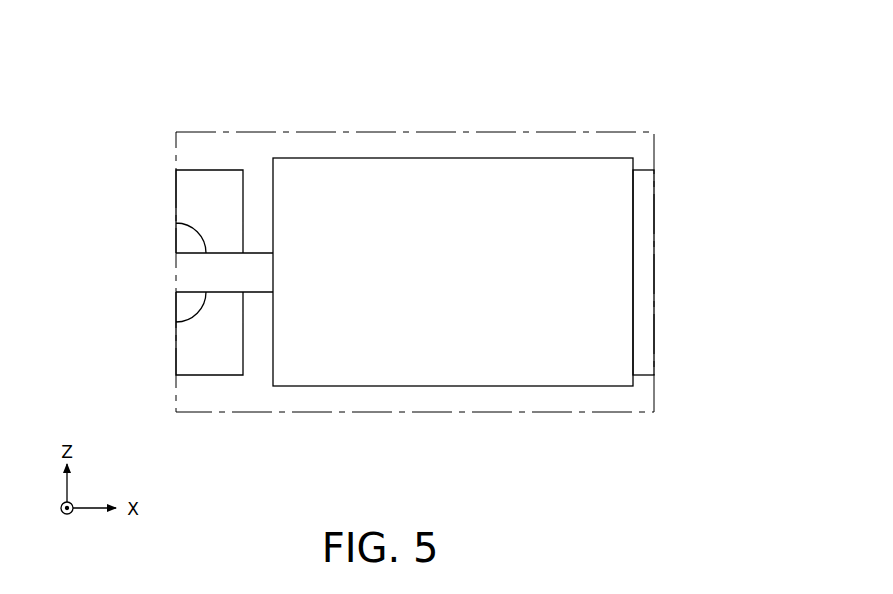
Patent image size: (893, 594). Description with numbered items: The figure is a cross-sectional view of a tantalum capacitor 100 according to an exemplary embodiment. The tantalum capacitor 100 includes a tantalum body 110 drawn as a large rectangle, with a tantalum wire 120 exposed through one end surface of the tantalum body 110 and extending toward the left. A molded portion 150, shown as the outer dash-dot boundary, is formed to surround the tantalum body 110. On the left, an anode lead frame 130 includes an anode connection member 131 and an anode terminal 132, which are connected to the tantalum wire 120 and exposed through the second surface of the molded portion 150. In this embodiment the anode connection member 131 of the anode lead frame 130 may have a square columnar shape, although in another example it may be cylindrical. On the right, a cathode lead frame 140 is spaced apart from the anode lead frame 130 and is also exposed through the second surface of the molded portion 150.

The tantalum capacitor 100 is at (368, 43).
The tantalum body 110 is at (618, 253).
The tantalum wire 120 is at (184, 266).
The anode lead frame 130 is at (185, 313).
The anode connection member 131 is at (184, 306).
The anode terminal 132 is at (184, 348).
The cathode lead frame 140 is at (645, 295).
The molded portion 150 is at (592, 128).